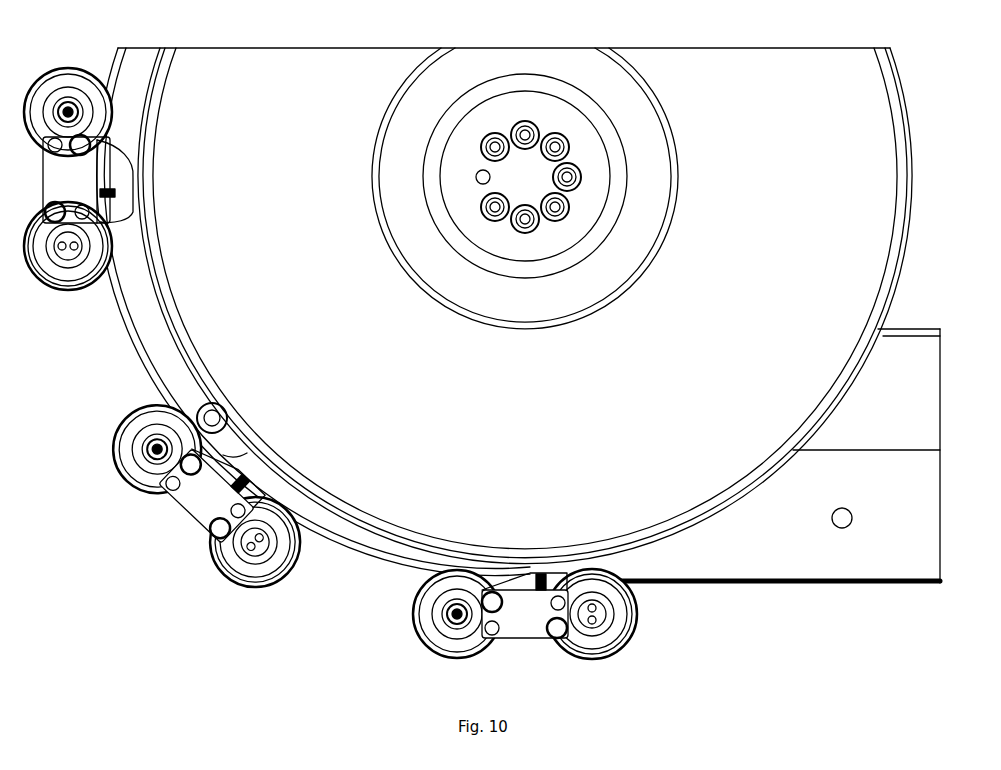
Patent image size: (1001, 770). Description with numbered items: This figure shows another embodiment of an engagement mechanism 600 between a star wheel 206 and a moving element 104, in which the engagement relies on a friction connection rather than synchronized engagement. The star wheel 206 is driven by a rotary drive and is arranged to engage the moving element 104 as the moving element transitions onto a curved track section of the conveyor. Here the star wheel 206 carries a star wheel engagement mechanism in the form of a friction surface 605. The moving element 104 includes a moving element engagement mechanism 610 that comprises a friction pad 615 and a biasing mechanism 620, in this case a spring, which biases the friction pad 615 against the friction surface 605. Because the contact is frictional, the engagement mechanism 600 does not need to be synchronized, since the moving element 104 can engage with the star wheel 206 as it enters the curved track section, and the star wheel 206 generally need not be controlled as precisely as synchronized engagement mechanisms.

The star wheel 206 is at (571, 415).
The engagement mechanism 600 is at (308, 446).
The friction surface 605 is at (333, 523).
The moving element engagement mechanism 610 is at (272, 495).
The friction pad 615 is at (225, 455).
The biasing mechanism 620 is at (263, 500).
The moving element 104 is at (505, 640).